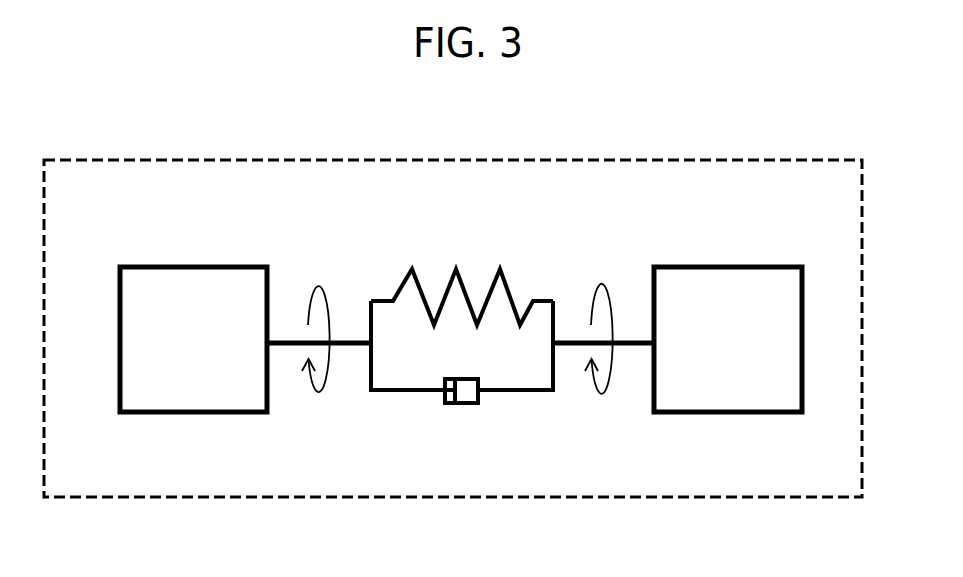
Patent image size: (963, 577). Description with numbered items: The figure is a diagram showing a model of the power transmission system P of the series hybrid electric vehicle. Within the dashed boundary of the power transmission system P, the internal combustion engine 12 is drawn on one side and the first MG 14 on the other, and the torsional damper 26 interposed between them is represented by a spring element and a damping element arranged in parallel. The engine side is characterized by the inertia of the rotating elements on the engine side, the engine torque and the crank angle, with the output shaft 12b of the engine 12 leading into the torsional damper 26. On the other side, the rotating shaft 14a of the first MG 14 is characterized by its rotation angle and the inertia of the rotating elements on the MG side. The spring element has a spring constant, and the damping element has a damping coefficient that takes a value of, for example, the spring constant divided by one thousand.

The internal combustion engine 12 is at (130, 258).
The engine output shaft 12b is at (288, 340).
The torsional damper 26 is at (545, 301).
The rotating shaft 14a is at (628, 340).
The first MG 14 is at (790, 252).
The power transmission system P is at (760, 160).